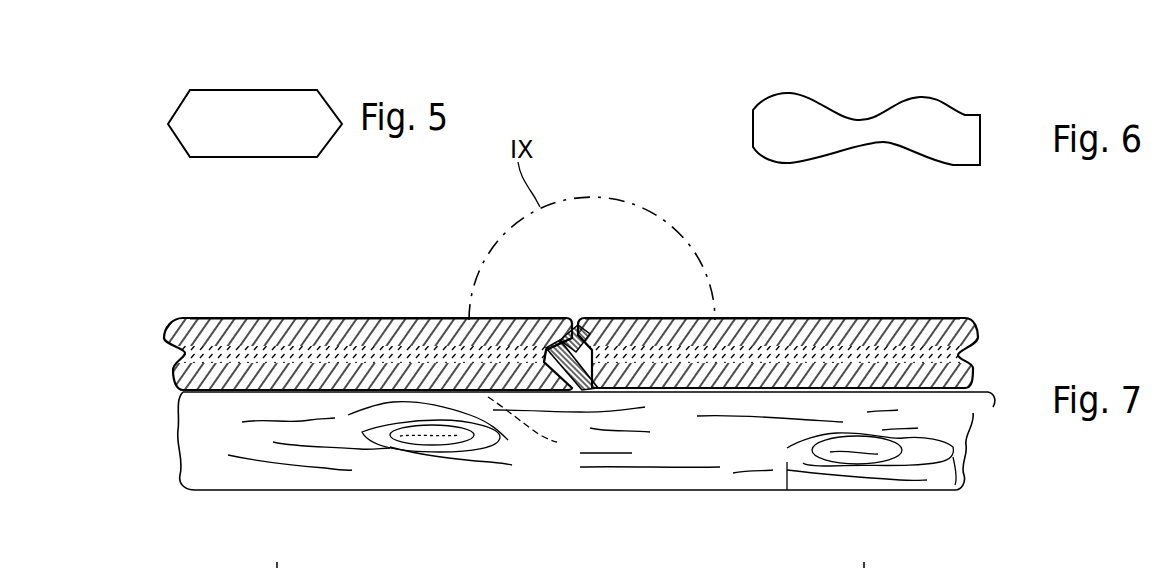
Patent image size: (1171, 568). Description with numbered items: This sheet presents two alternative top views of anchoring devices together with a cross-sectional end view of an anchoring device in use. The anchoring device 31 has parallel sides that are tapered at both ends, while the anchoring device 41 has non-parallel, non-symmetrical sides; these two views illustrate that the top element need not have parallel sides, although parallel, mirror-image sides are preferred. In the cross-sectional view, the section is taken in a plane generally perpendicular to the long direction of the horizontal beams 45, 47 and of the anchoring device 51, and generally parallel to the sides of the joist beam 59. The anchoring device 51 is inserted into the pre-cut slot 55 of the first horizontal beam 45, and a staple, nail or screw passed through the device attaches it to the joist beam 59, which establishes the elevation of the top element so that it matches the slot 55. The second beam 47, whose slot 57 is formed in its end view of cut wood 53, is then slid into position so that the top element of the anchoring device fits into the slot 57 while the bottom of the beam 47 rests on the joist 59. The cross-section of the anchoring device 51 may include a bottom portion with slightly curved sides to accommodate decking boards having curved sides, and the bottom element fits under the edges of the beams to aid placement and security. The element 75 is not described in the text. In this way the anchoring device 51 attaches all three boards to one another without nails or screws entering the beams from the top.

In FIG. 5, the anchoring device 31 is at (232, 100).
In FIG. 6, the anchoring device 41 is at (947, 113).
In FIG. 7, the horizontal beam 45 is at (278, 302).
In FIG. 7, the horizontal beam 47 is at (843, 317).
In FIG. 7, the anchoring device 51 is at (578, 342).
In FIG. 7, the cut wood 53 is at (782, 340).
In FIG. 7, the pre-cut slot 55 is at (545, 347).
In FIG. 7, the slot 57 is at (627, 327).
In FIG. 7, the joist beam 59 is at (805, 493).
In FIG. 7, the top surface of first panel 75 is at (393, 318).